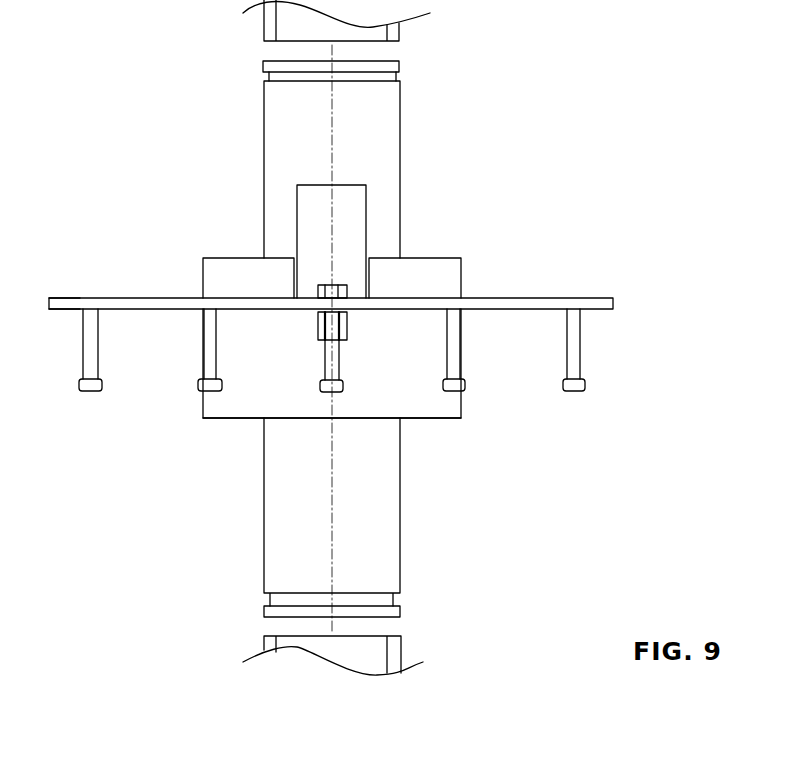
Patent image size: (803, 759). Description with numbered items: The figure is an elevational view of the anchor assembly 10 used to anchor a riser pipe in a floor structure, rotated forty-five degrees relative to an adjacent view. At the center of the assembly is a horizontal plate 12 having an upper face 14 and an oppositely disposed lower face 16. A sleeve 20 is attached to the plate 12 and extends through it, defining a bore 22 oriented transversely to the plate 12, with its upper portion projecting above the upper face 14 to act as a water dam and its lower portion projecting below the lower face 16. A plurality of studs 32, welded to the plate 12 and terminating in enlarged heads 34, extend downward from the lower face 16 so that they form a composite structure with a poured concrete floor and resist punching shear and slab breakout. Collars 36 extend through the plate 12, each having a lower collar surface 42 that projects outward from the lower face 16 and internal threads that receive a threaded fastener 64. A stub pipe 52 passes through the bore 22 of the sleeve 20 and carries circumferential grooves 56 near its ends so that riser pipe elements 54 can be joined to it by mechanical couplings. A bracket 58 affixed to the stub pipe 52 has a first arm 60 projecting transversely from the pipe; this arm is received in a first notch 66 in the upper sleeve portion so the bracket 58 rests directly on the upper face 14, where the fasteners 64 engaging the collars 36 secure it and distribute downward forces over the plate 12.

The anchor assembly 10 is at (612, 75).
The plate 12 is at (585, 298).
The upper face 14 is at (67, 297).
The lower face 16 is at (60, 312).
The sleeve 20 is at (445, 407).
The bore 22 is at (423, 418).
The studs 32 is at (580, 353).
The enlarged heads 34 is at (572, 392).
The collars 36 is at (318, 320).
The lower collar surface 42 is at (343, 342).
The stub pipe 52 is at (388, 117).
The riser pipe elements 54 is at (400, 32).
The circumferential grooves 56 is at (388, 602).
The bracket 58 is at (312, 252).
The first arm 60 is at (355, 213).
The threaded fasteners 64 is at (330, 285).
The first notch 66 is at (367, 288).